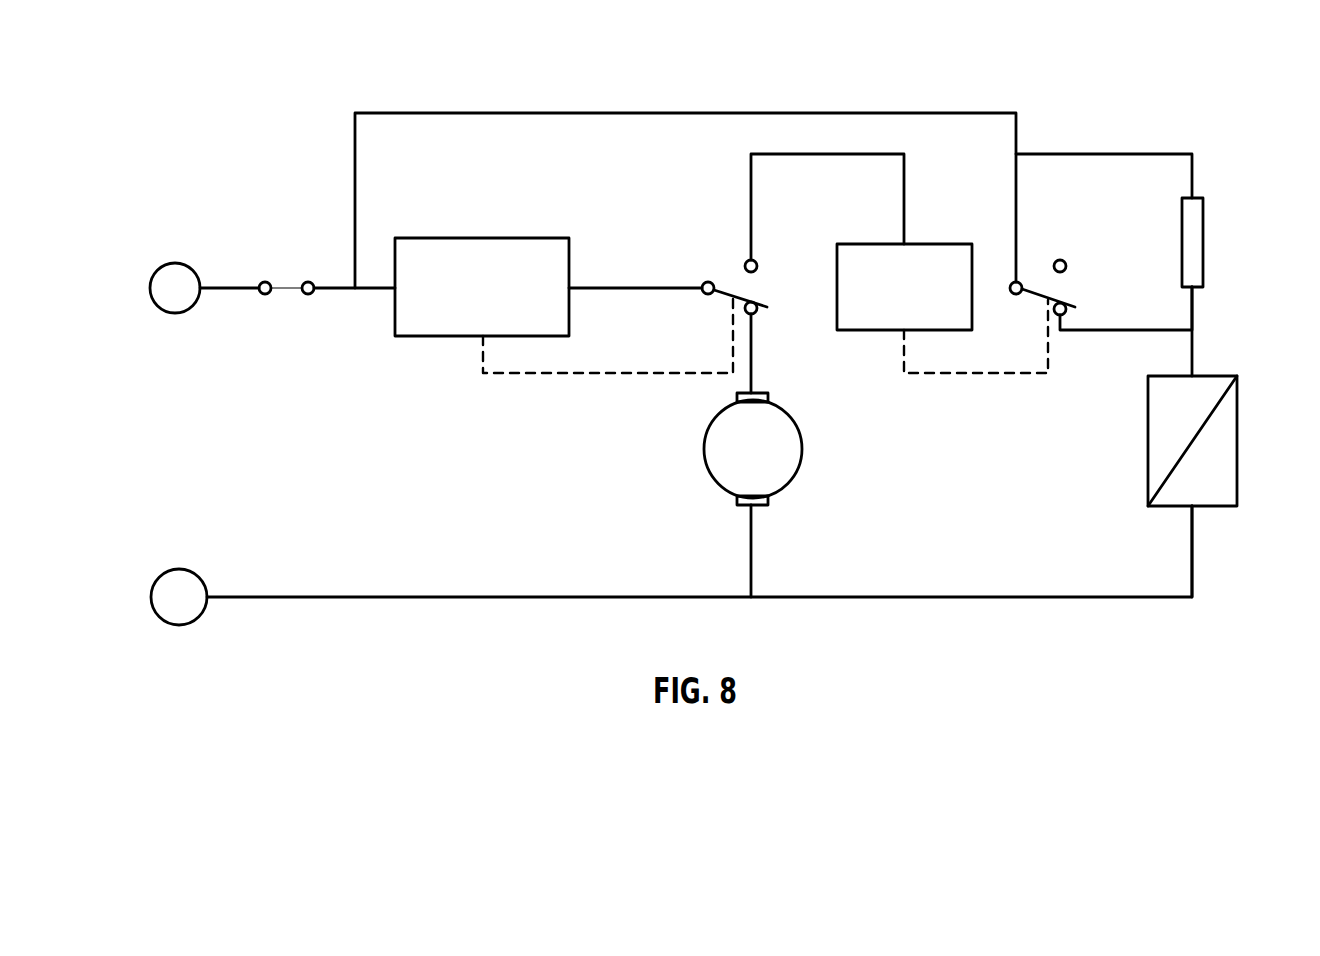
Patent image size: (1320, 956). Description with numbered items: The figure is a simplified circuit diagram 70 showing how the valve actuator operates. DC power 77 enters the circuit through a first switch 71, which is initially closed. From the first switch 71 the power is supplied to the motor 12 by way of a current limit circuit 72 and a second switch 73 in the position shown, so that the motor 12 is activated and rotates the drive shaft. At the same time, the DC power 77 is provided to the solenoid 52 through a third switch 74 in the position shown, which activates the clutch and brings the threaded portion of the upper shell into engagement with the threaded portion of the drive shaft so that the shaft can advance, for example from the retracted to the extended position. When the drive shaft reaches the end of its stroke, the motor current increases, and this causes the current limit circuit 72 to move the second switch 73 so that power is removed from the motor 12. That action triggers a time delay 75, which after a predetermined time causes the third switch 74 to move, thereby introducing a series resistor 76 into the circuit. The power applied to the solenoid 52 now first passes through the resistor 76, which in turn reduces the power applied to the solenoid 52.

The circuit diagram 70 is at (1204, 72).
The DC power 77 is at (153, 270).
The first switch 71 is at (287, 295).
The current limit circuit 72 is at (508, 238).
The second switch 73 is at (750, 297).
The time delay 75 is at (930, 244).
The third switch 74 is at (1057, 300).
The series resistor 76 is at (1205, 240).
The motor 12 is at (788, 453).
The solenoid 52 is at (1238, 450).